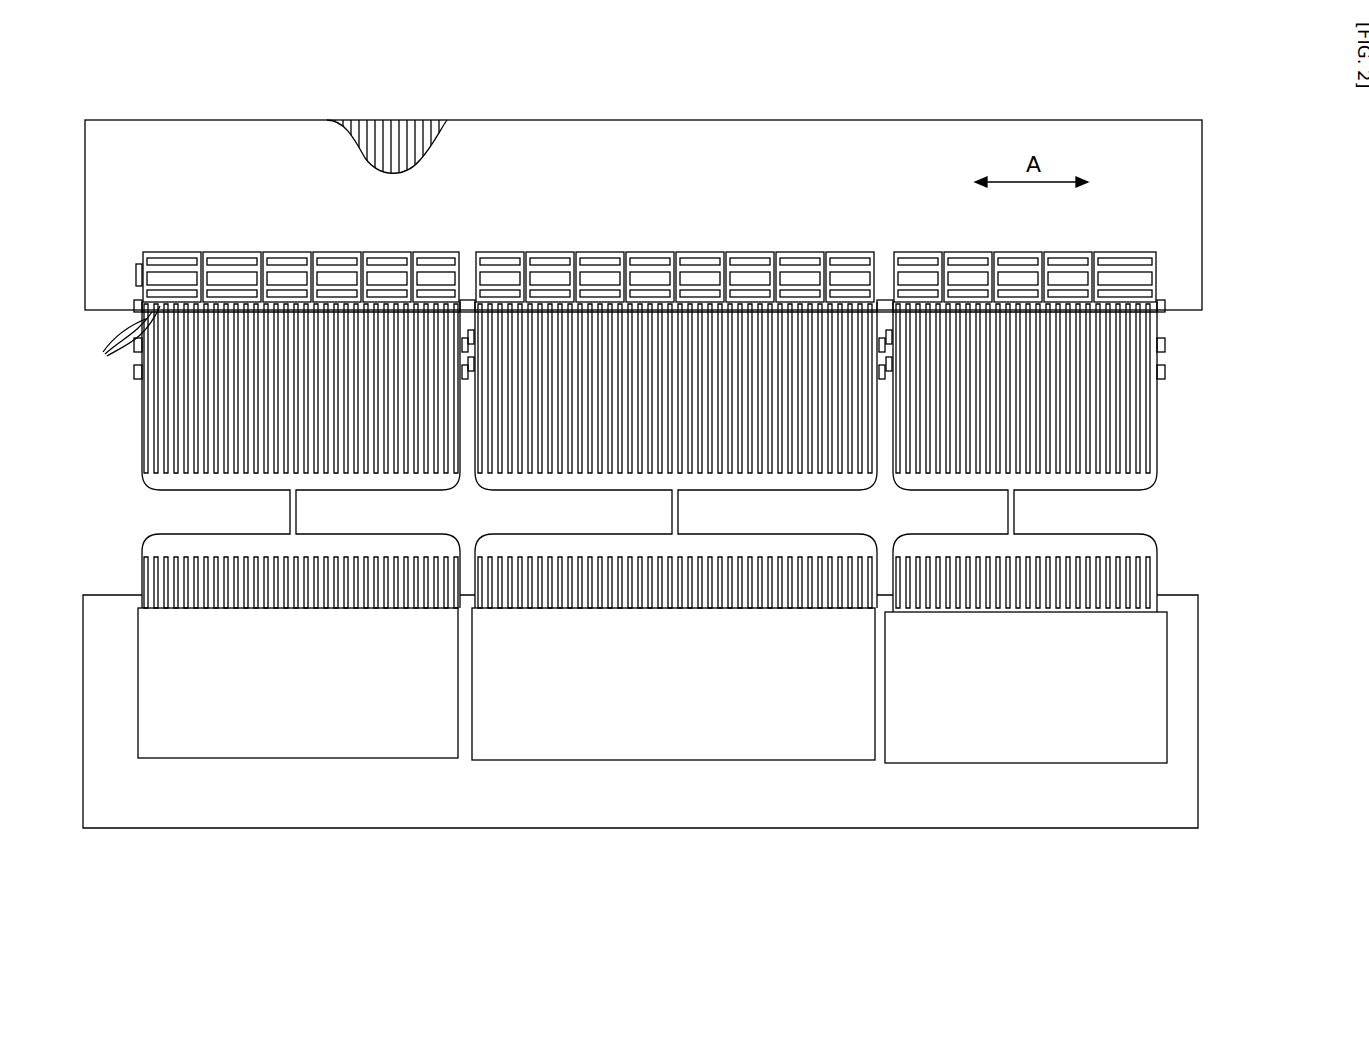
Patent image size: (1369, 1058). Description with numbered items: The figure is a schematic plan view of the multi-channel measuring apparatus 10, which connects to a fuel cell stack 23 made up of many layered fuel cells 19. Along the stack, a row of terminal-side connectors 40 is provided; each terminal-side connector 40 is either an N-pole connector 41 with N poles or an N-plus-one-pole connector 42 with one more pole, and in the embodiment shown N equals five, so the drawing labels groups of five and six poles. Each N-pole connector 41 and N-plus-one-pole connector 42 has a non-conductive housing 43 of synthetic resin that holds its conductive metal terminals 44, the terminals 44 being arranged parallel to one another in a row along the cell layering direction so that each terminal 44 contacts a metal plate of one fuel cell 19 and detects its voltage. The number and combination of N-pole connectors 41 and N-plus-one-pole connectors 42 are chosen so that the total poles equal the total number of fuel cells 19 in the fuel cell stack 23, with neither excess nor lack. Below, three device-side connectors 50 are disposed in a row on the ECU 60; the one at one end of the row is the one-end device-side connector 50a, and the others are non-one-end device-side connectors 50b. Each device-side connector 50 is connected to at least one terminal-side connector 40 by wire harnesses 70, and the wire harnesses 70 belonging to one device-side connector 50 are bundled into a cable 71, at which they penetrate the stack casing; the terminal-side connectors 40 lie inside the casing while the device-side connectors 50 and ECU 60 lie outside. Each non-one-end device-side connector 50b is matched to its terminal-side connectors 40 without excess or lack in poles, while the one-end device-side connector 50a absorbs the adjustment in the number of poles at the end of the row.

The multi-channel measuring apparatus 10 is at (700, 456).
The fuel cell 19 is at (397, 135).
The fuel cell stack 23 is at (1202, 178).
The terminal-side connector 40 is at (649, 174).
The N-pole connector 41 is at (425, 256).
The (N+1)-pole connector 42 is at (248, 256).
The housing 43 is at (136, 274).
The terminal 44 is at (120, 345).
The device-side connector 50 is at (652, 765).
The one-end device-side connector 50a is at (1063, 763).
The non-one-end device-side connector 50b is at (295, 760).
The ECU 60 is at (415, 828).
The wire harness 70 is at (1137, 352).
The cable 71 is at (289, 514).